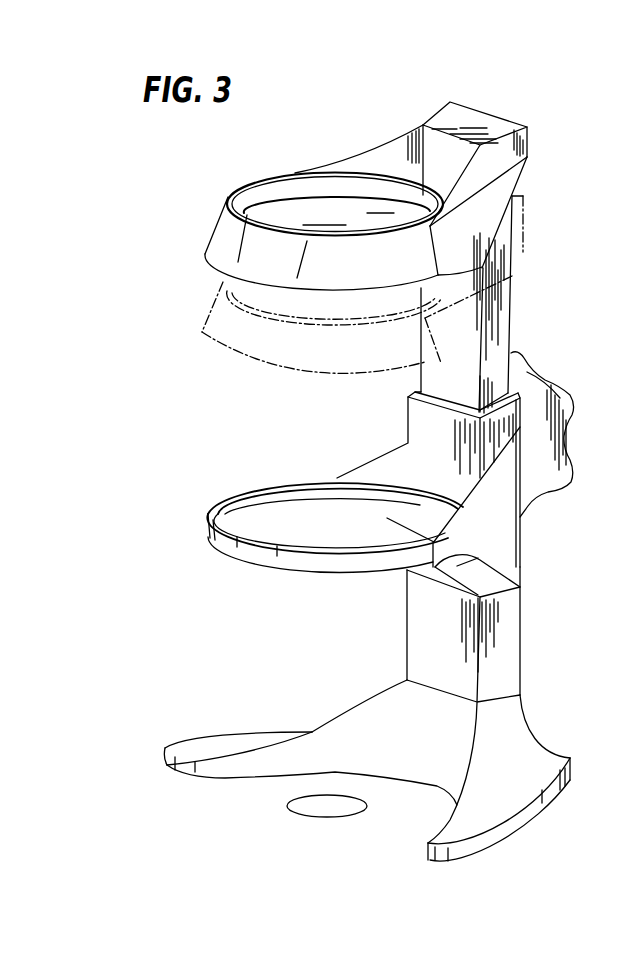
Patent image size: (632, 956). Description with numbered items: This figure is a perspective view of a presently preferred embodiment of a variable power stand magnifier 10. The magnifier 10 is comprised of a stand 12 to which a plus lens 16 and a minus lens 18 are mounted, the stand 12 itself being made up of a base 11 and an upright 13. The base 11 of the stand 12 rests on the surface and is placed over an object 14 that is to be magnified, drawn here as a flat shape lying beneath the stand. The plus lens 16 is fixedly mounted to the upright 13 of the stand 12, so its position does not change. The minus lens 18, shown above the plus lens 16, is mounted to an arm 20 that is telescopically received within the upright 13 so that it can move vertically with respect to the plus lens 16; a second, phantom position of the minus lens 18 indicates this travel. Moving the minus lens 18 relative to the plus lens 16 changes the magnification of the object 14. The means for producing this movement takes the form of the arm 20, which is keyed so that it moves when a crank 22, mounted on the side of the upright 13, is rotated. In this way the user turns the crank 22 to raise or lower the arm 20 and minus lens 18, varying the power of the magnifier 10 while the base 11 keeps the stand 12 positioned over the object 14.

The variable power stand magnifier 10 is at (385, 487).
The base 11 is at (518, 770).
The stand 12 is at (573, 548).
The upright 13 is at (438, 444).
The object 14 is at (338, 810).
The plus lens 16 is at (227, 550).
The minus lens 18 is at (205, 246).
The arm 20 is at (512, 282).
The crank 22 is at (540, 376).